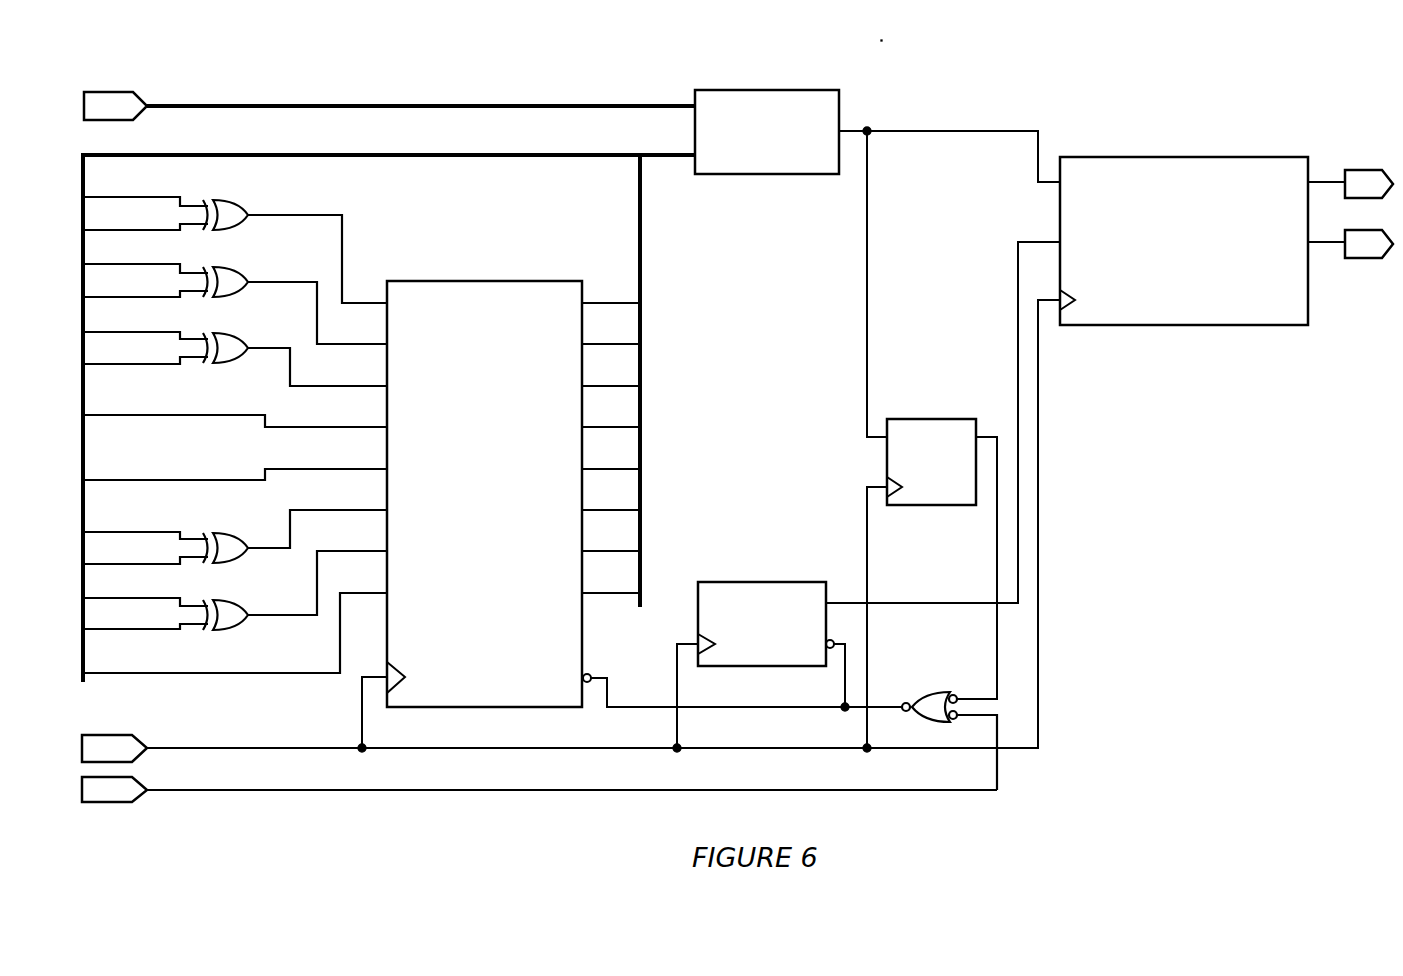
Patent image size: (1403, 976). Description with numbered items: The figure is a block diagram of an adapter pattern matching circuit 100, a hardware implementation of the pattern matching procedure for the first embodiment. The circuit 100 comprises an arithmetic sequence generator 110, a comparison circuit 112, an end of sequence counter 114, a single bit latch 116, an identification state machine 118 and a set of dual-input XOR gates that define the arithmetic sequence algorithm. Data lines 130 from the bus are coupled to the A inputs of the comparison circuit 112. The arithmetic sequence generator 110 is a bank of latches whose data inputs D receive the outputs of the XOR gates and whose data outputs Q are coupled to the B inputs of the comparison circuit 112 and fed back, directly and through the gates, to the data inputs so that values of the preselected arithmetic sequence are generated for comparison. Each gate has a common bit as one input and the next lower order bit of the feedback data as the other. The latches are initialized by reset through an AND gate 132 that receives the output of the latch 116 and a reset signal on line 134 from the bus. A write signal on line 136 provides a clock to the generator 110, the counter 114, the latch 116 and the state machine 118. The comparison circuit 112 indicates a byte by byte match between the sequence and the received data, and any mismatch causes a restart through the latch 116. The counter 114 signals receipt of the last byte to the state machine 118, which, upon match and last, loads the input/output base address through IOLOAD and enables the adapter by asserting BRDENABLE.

The adapter pattern matching circuit 100 is at (880, 47).
The arithmetic sequence generator 110 is at (483, 281).
The comparison circuit 112 is at (765, 90).
The end of sequence counter 114 is at (762, 582).
The single bit latch 116 is at (928, 419).
The identification state machine 118 is at (1092, 157).
The data lines 130 is at (448, 104).
The AND gate 132 is at (930, 692).
The reset signal line 134 is at (280, 790).
The write signal line 136 is at (282, 748).